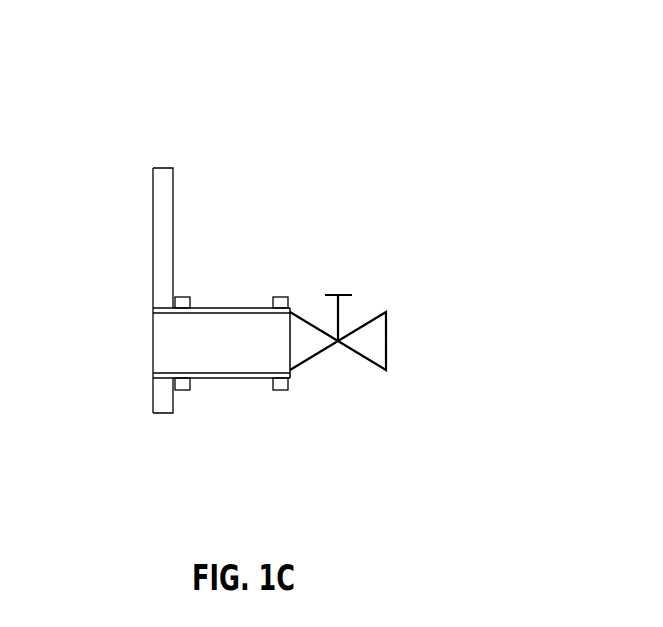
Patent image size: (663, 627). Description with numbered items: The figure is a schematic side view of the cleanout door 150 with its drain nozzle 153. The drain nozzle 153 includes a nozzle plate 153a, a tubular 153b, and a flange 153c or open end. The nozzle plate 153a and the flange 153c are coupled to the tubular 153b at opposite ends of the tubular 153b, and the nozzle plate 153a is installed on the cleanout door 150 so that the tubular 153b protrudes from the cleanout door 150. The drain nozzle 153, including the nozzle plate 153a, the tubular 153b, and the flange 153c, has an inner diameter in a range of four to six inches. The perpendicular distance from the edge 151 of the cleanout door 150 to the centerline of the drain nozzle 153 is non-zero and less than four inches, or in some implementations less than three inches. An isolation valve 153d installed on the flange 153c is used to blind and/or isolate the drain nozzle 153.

The cleanout door 150 is at (200, 116).
The edge 151 is at (163, 413).
The drain nozzle 153 is at (223, 230).
The nozzle plate 153a is at (180, 390).
The tubular 153b is at (227, 308).
The flange 153c is at (283, 390).
The isolation valve 153d is at (387, 326).